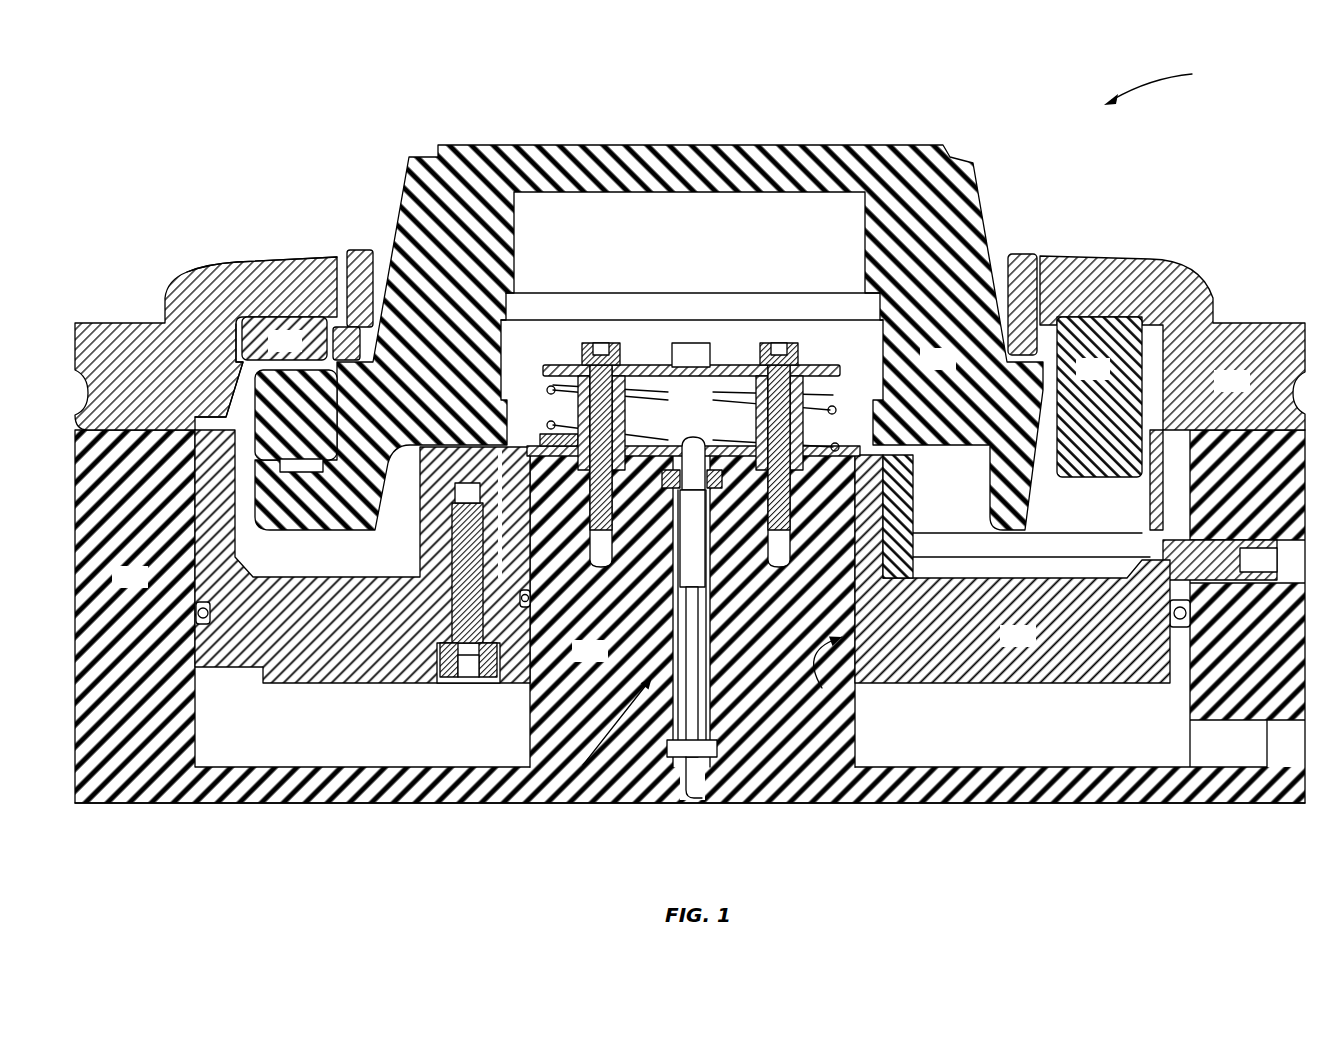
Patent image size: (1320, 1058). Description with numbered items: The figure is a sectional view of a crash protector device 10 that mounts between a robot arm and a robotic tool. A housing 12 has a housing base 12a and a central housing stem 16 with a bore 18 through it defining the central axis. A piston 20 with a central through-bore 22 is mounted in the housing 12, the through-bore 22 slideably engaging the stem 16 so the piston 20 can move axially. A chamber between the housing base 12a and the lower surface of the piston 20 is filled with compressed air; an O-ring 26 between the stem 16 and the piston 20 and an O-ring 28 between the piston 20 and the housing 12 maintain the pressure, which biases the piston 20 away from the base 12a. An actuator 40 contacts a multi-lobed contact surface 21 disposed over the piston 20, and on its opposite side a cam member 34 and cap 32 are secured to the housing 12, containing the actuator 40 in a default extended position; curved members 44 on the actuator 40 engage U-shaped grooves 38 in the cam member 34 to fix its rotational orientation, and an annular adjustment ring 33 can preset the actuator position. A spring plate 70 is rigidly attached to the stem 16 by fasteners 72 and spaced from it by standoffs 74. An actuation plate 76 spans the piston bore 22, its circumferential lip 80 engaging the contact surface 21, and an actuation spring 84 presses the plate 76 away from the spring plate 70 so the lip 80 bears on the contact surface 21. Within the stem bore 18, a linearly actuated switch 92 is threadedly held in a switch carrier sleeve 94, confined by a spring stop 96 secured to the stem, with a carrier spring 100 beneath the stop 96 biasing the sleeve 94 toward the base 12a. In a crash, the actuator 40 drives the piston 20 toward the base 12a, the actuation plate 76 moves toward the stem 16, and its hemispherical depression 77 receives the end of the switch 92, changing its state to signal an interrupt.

The crash protector device 10 is at (1166, 84).
The housing 12 is at (690, 616).
The housing base 12a is at (1010, 790).
The housing stem 16 is at (692, 611).
The bore 18 is at (583, 765).
The piston 20 is at (1012, 569).
The contact surface 21 is at (292, 262).
The through-bore 22 is at (712, 684).
The O-ring 26 is at (526, 610).
The O-ring 28 is at (193, 614).
The cap 32 is at (1109, 405).
The annular adjustment ring 33 is at (338, 258).
The cam member 34 is at (692, 397).
The U-shaped grooves 38 is at (233, 403).
The actuator 40 is at (649, 337).
The curved members 44 is at (192, 337).
The spring plate 70 is at (733, 385).
The fasteners 72 is at (620, 358).
The standoffs 74 is at (577, 415).
The actuation plate 76 is at (668, 440).
The depression 77 is at (665, 451).
The circumferential lip 80 is at (855, 440).
The actuation spring 84 is at (738, 405).
The linearly actuated switch 92 is at (697, 551).
The switch carrier sleeve 94 is at (705, 690).
The spring stop 96 is at (672, 484).
The carrier spring 100 is at (712, 510).